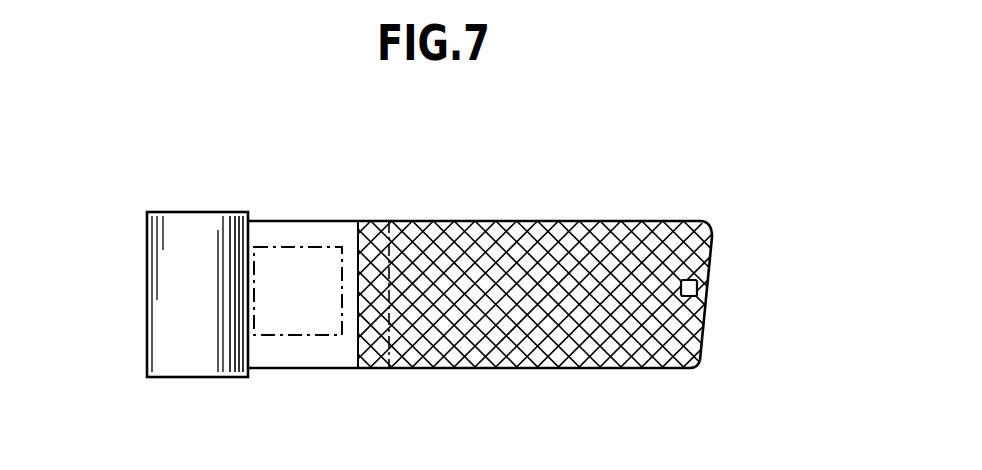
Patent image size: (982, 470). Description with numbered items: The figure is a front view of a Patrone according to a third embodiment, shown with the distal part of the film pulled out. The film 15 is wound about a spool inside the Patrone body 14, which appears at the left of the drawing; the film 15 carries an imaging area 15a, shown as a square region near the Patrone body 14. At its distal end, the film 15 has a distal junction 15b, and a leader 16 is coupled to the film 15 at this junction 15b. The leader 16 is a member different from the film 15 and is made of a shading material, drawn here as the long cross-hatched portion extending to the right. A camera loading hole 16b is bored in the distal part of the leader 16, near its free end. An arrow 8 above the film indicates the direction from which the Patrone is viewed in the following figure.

The arrow 8 is at (368, 168).
The Patrone body 14 is at (177, 240).
The film 15 is at (287, 232).
The imaging area 15a is at (300, 325).
The distal junction 15b is at (378, 221).
The leader 16 is at (650, 243).
The camera loading hole 16b is at (698, 288).